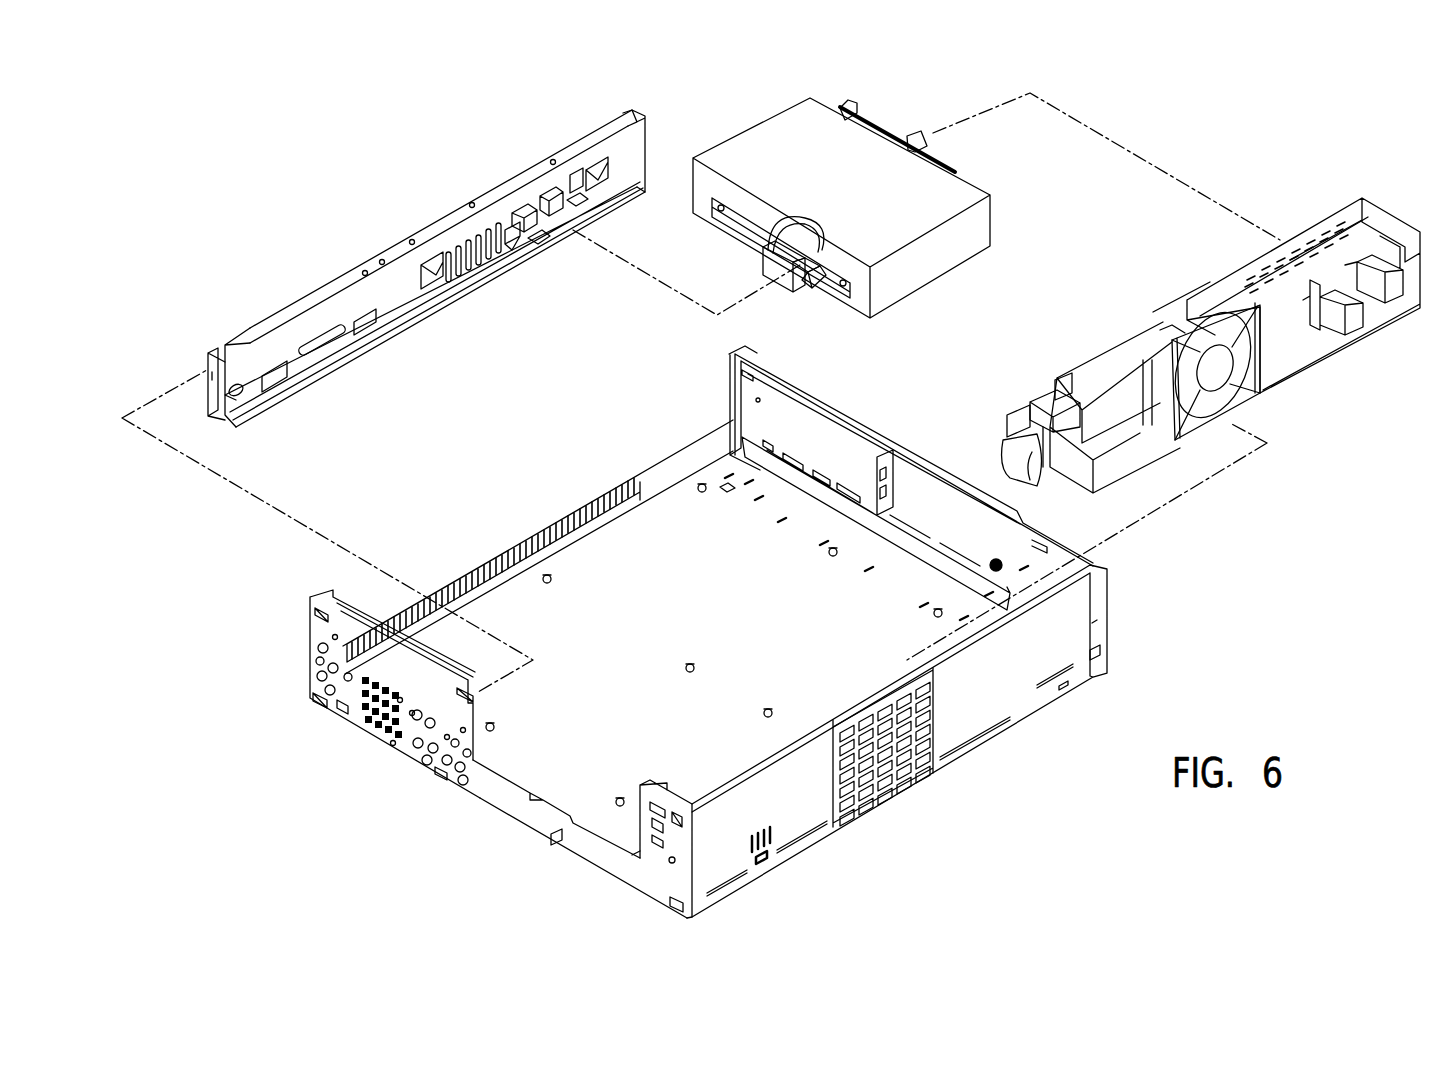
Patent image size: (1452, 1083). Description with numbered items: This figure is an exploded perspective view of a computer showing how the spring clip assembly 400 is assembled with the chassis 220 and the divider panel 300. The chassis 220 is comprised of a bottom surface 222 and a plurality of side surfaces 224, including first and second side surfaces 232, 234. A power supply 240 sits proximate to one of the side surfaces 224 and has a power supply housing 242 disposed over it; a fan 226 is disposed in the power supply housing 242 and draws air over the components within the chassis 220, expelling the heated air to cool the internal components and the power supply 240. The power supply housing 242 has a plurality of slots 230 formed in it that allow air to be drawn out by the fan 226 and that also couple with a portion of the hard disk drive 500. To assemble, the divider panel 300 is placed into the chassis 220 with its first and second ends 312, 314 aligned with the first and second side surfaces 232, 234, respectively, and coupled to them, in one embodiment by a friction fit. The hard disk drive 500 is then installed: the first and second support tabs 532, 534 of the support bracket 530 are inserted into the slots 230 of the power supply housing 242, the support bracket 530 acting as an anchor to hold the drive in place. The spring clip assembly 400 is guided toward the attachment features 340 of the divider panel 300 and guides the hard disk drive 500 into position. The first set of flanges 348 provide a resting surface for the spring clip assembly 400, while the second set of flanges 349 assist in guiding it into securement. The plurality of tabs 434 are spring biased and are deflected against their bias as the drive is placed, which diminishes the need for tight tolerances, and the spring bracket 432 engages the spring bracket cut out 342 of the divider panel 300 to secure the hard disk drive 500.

The chassis 220 is at (740, 632).
The bottom surface 222 is at (741, 617).
The side surfaces 224 is at (1107, 598).
The fan 226 is at (1218, 382).
The slots 230 is at (1340, 204).
The first side surface 232 is at (943, 470).
The second side surface 234 is at (510, 800).
The power supply 240 is at (1211, 330).
The power supply housing 242 is at (1108, 378).
The divider panel 300 is at (454, 274).
The first end 312 is at (627, 157).
The second end 314 is at (212, 404).
The attachment features 340 is at (513, 240).
The spring bracket cut out 342 is at (545, 195).
The first set of flanges 348 is at (526, 205).
The second set of flanges 349 is at (578, 206).
The spring clip assembly 400 is at (755, 278).
The spring bracket 432 is at (790, 272).
The tabs 434 is at (823, 302).
The hard disk drive 500 is at (858, 195).
The support bracket 530 is at (940, 156).
The first support tab 532 is at (906, 139).
The second support tab 534 is at (856, 112).